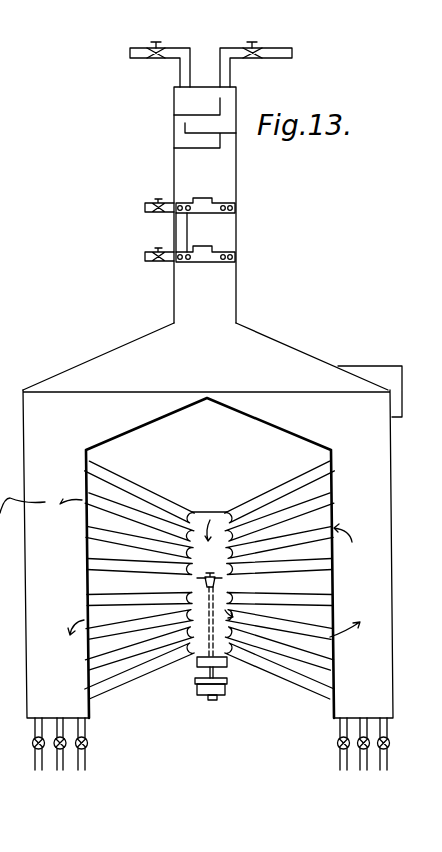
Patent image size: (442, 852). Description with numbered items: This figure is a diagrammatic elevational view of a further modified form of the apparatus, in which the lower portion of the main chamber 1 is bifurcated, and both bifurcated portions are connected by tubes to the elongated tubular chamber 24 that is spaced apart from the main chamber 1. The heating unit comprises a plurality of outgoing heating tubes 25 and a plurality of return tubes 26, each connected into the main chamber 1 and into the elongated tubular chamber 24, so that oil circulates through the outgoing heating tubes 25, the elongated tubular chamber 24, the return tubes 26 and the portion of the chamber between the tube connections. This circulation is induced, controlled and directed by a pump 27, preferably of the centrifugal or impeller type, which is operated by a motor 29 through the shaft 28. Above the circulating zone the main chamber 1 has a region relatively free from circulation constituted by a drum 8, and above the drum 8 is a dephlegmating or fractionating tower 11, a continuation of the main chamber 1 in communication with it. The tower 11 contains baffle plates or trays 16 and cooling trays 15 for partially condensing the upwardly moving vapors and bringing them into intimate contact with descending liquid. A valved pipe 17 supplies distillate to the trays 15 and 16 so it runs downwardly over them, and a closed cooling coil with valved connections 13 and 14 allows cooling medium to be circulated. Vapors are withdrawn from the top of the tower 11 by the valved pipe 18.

The main chamber 1 is at (375, 550).
The drum 8 is at (268, 337).
The dephlegmating or fractionating tower 11 is at (290, 285).
The valved connection 13 is at (147, 202).
The valved connection 14 is at (145, 262).
The cooling trays 15 is at (300, 207).
The baffle plates or trays 16 is at (287, 100).
The valved pipe 17 is at (142, 47).
The valved pipe 18 is at (313, 41).
The elongated tubular chamber 24 is at (172, 582).
The outgoing heating tubes 25 is at (273, 485).
The return tubes 26 is at (305, 695).
The pump 27 is at (245, 582).
The shaft 28 is at (225, 675).
The motor 29 is at (218, 700).